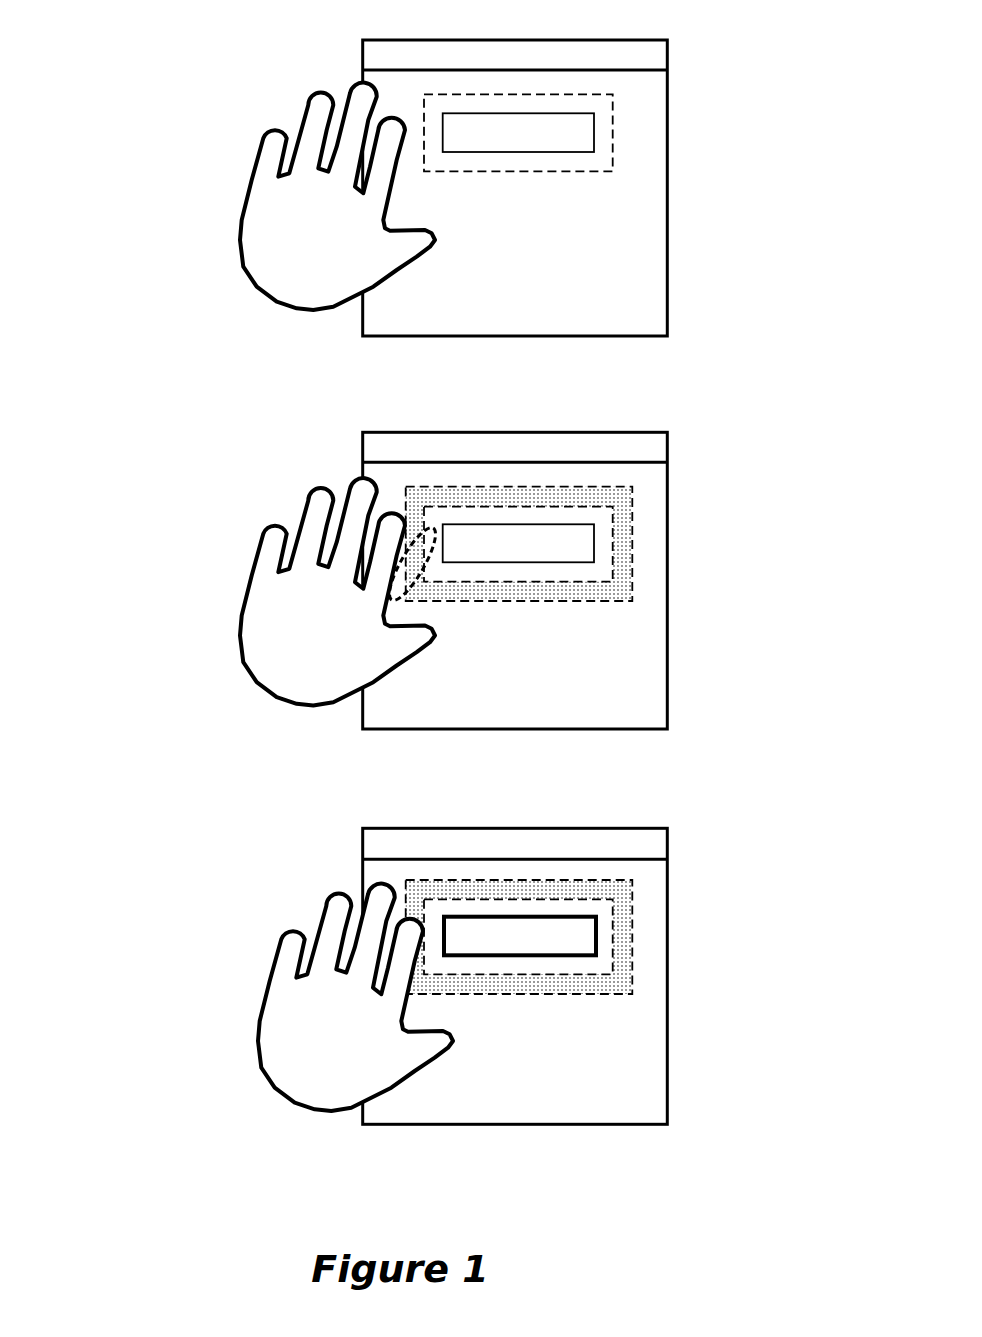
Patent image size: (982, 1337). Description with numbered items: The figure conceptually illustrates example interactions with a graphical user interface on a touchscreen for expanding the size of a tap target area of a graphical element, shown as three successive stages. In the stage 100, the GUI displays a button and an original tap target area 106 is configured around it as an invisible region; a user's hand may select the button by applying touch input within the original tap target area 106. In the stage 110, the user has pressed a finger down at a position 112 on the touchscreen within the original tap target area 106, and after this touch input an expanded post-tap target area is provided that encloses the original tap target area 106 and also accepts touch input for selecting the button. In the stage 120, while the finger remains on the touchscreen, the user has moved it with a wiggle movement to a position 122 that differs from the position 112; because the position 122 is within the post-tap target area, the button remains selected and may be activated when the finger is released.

The stage 100 is at (98, 16).
The original tap target area 106 is at (600, 107).
The stage 110 is at (98, 412).
The position 112 is at (433, 538).
The stage 120 is at (98, 825).
The position 122 is at (418, 930).